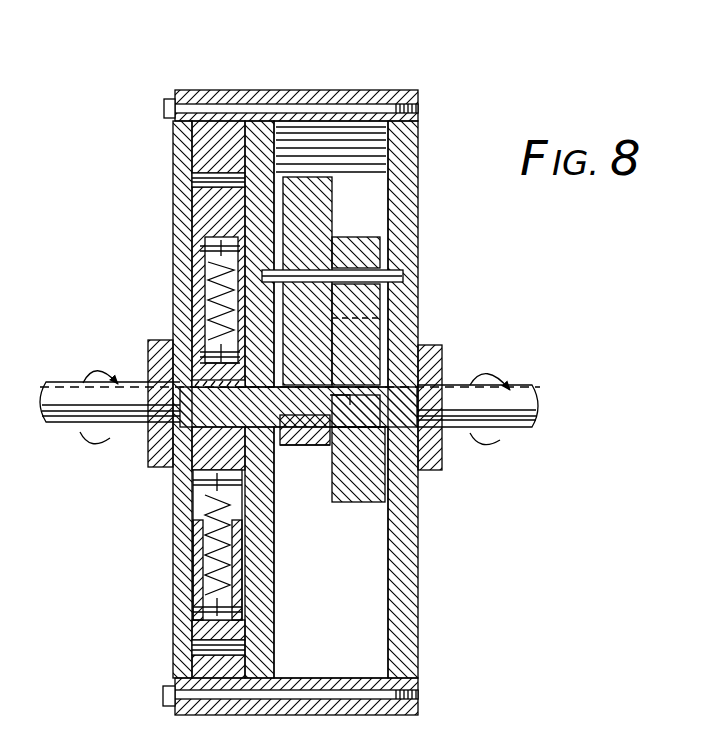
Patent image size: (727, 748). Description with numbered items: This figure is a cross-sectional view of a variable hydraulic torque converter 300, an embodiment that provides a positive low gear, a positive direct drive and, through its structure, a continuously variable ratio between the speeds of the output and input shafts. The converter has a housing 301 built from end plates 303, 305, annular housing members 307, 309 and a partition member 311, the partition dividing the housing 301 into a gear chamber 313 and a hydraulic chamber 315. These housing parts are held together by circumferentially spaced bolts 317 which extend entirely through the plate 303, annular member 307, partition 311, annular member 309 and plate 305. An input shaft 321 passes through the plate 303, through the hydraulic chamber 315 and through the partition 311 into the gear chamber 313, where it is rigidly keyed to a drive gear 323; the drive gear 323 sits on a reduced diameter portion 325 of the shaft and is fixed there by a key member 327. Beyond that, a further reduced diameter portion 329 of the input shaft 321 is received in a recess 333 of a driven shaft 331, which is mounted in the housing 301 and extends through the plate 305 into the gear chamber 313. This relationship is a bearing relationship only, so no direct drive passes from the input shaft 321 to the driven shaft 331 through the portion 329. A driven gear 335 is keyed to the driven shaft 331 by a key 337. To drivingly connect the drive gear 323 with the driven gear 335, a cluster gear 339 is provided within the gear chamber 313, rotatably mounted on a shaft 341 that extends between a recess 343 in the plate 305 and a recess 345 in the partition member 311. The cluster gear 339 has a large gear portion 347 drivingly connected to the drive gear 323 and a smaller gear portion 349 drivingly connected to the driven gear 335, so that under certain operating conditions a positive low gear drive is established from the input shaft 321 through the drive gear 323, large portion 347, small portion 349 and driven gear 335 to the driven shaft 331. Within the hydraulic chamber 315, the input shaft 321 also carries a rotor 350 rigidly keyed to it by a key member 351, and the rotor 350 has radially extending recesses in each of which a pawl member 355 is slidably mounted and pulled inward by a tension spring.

The variable hydraulic torque converter 300 is at (480, 85).
The housing 301 is at (308, 86).
The end plate 303 is at (175, 161).
The end plate 305 is at (406, 140).
The annular housing member 307 is at (208, 118).
The annular housing member 309 is at (360, 98).
The partition member 311 is at (280, 130).
The gear chamber 313 is at (342, 585).
The hydraulic chamber 315 is at (192, 575).
The bolts 317 is at (163, 697).
The input shaft 321 is at (55, 396).
The drive gear 323 is at (313, 431).
The reduced diameter portion 325 is at (287, 412).
The key member 327 is at (292, 400).
The further reduced diameter portion 329 is at (345, 407).
The driven shaft 331 is at (520, 430).
The recess 333 is at (365, 410).
The driven gear 335 is at (370, 500).
The key 337 is at (410, 372).
The cluster gear 339 is at (348, 184).
The shaft 341 is at (356, 278).
The recess 343 is at (392, 273).
The recess 345 is at (210, 290).
The large gear portion 347 is at (318, 220).
The smaller gear portion 349 is at (370, 248).
The rotor 350 is at (187, 336).
The key member 351 is at (187, 381).
The pawl member 355 is at (200, 212).